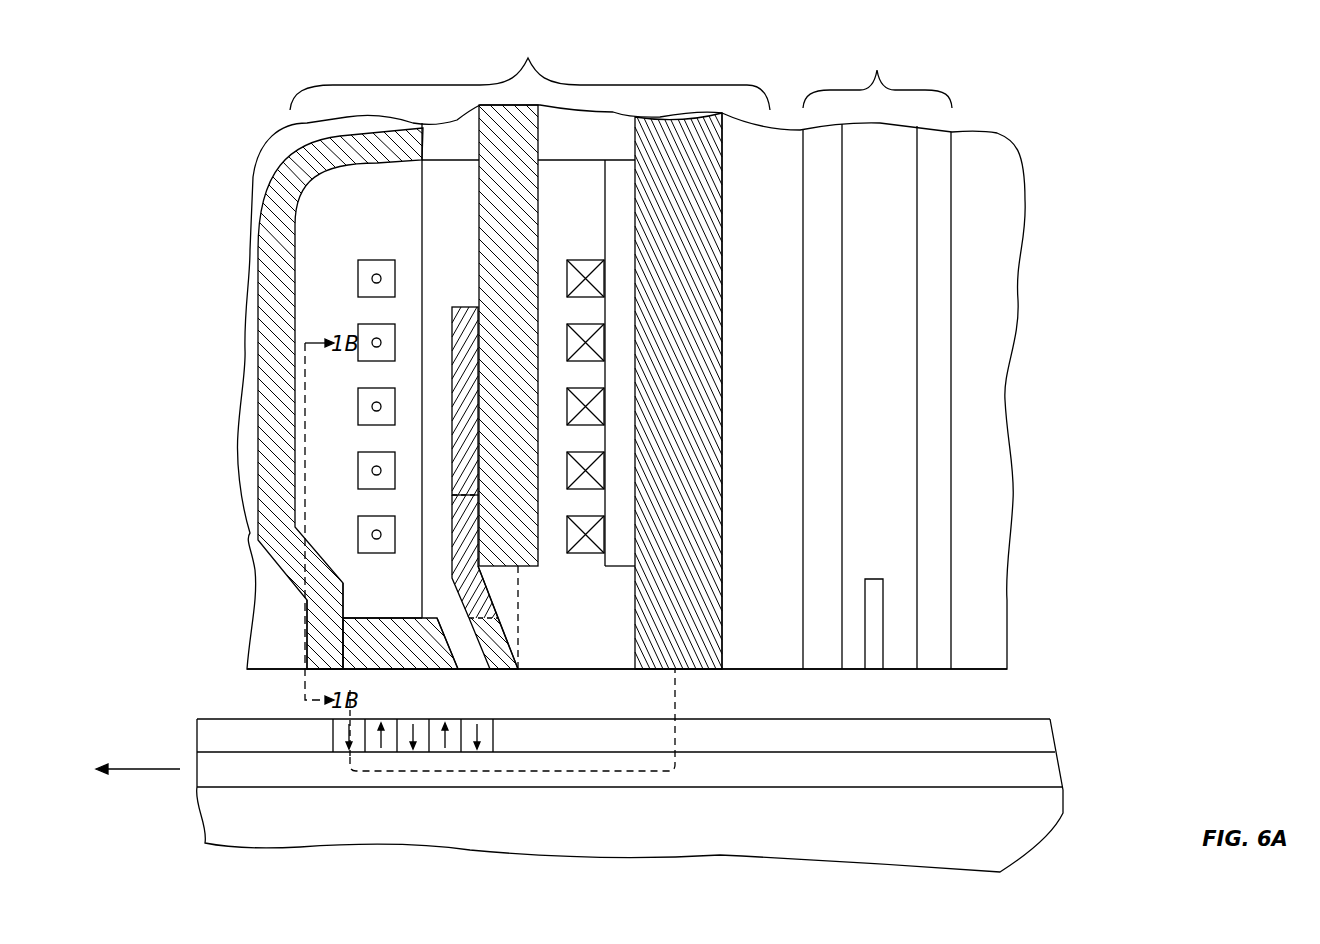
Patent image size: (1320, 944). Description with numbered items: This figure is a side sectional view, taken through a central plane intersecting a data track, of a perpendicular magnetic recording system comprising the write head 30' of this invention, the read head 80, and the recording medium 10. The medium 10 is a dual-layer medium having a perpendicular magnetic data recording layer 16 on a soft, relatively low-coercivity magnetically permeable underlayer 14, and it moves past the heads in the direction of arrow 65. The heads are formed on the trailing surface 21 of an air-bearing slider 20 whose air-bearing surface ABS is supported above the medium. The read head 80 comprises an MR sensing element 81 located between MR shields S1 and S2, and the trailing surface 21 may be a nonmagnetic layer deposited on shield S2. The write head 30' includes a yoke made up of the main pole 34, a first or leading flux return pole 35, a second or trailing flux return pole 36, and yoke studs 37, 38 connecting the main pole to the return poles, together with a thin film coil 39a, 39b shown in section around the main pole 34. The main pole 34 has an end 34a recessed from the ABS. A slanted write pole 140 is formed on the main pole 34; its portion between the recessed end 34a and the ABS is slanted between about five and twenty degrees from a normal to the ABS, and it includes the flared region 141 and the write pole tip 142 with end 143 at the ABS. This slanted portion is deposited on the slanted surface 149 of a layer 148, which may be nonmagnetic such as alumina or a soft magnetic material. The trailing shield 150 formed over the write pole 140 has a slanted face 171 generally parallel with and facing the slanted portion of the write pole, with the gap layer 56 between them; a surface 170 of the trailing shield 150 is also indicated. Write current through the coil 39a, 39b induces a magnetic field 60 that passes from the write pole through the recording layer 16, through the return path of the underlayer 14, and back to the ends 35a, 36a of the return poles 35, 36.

The air-bearing slider 20 is at (1005, 400).
The perpendicular magnetic recording write head 30' is at (530, 69).
The magnetoresistive read head 80 is at (877, 352).
The second or trailing flux return pole 36 is at (265, 250).
The end of trailing flux return pole 36a is at (310, 672).
The yoke stud 38 is at (457, 133).
The main pole 34 is at (540, 215).
The recessed end of main pole 34a is at (525, 568).
The yoke stud 37 is at (575, 120).
The trailing surface 21 is at (722, 230).
The first or leading flux return pole 35 is at (722, 455).
The end of leading flux return pole 35a is at (690, 672).
The air-bearing surface ABS is at (772, 672).
The thin film coil 39b is at (403, 262).
The thin film coil 39a is at (617, 262).
The slanted write pole 140 is at (475, 305).
The flared region 141 is at (472, 592).
The layer 148 is at (510, 627).
The slanted surface 149 is at (497, 615).
The write pole tip 142 is at (507, 657).
The end of write pole tip 143 is at (502, 669).
The trailing shield 150 is at (353, 662).
The slanted face 171 is at (450, 628).
The leading shield top surface 170 is at (362, 617).
The gap layer 56 is at (470, 662).
The MR shield S2 is at (815, 572).
The MR shield S1 is at (943, 620).
The MR sensing element 81 is at (873, 662).
The perpendicular magnetic data recording layer 16 is at (1043, 735).
The soft underlayer 14 is at (1050, 770).
The dual-layer medium 10 is at (1050, 857).
The magnetic field 60 is at (420, 773).
The direction arrow 65 is at (137, 770).